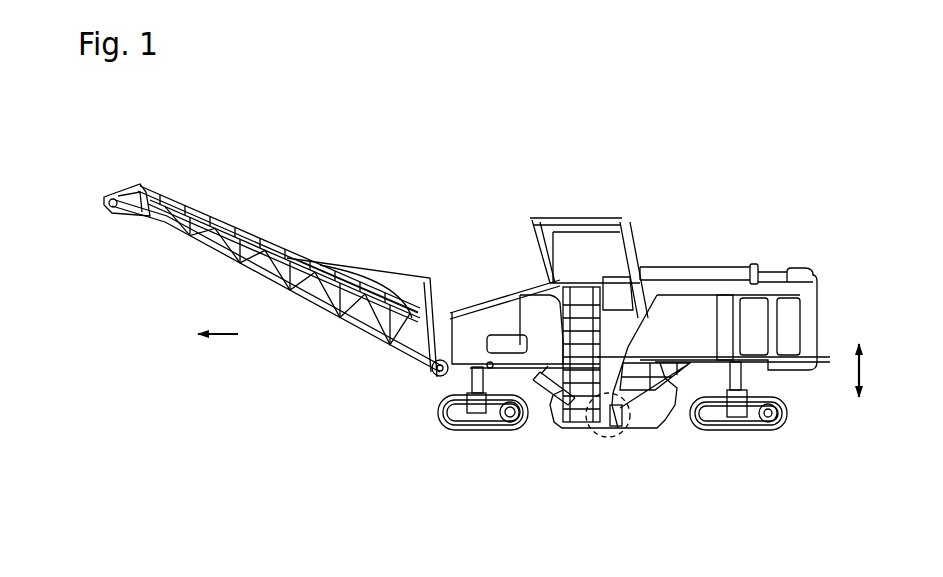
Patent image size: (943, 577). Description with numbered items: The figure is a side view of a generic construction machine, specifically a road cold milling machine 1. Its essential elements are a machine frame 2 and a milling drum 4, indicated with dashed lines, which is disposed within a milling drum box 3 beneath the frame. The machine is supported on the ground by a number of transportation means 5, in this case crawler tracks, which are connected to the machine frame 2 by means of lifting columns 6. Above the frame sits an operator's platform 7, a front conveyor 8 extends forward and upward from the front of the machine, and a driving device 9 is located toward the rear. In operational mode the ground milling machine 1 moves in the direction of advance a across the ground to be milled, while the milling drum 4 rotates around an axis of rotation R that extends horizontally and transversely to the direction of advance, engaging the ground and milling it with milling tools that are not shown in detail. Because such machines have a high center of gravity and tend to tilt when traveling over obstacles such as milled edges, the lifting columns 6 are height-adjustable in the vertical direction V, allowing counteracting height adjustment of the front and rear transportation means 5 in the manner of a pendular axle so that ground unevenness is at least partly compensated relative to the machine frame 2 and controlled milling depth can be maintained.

The road cold milling machine 1 is at (617, 126).
The machine frame 2 is at (459, 352).
The milling drum box 3 is at (580, 423).
The milling drum 4 is at (616, 436).
The transportation means 5 is at (448, 428).
The lifting column 6 is at (474, 378).
The operator's platform 7 is at (615, 253).
The front conveyor 8 is at (229, 232).
The driving device 9 is at (762, 321).
The axis of rotation R is at (618, 412).
The direction of advance a is at (207, 333).
The vertical direction V is at (858, 353).